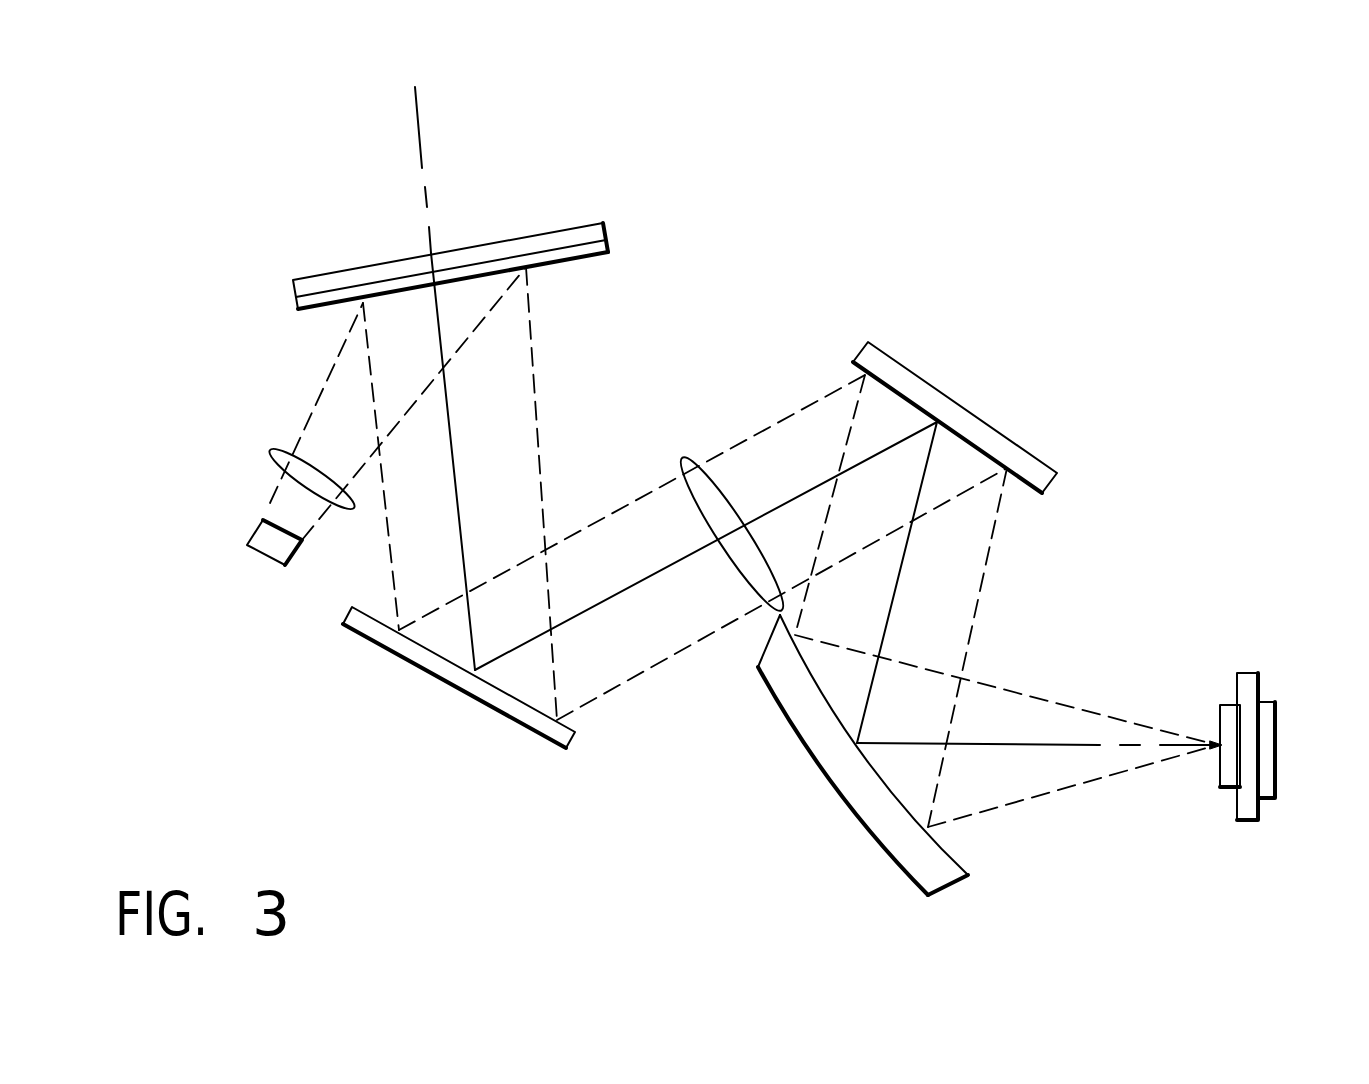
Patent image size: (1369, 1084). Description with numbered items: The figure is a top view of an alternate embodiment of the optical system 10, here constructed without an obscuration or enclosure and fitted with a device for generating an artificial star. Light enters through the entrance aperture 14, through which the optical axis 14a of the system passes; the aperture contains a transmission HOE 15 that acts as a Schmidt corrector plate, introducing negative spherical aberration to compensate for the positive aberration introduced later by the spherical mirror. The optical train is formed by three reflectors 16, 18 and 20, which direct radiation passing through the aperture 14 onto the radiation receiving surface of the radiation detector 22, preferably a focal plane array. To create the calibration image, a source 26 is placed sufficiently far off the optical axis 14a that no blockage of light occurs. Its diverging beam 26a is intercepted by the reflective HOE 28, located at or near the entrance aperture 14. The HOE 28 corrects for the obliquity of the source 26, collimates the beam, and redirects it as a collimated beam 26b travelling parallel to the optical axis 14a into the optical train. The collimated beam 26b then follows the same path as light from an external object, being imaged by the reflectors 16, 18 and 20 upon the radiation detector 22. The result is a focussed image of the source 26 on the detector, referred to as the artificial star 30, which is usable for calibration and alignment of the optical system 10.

The optical system 10 is at (1168, 355).
The entrance aperture 14 is at (293, 283).
The optical axis 14a is at (418, 113).
The transmission HOE 15 is at (541, 247).
The reflector 16 is at (426, 668).
The reflector 18 is at (1020, 446).
The reflector 20 is at (862, 807).
The radiation detector 22 is at (1260, 687).
The source 26 is at (247, 548).
The diverging beam 26a is at (272, 450).
The collimated beam 26b is at (696, 463).
The HOE 28 is at (611, 246).
The artificial star 30 is at (1216, 738).